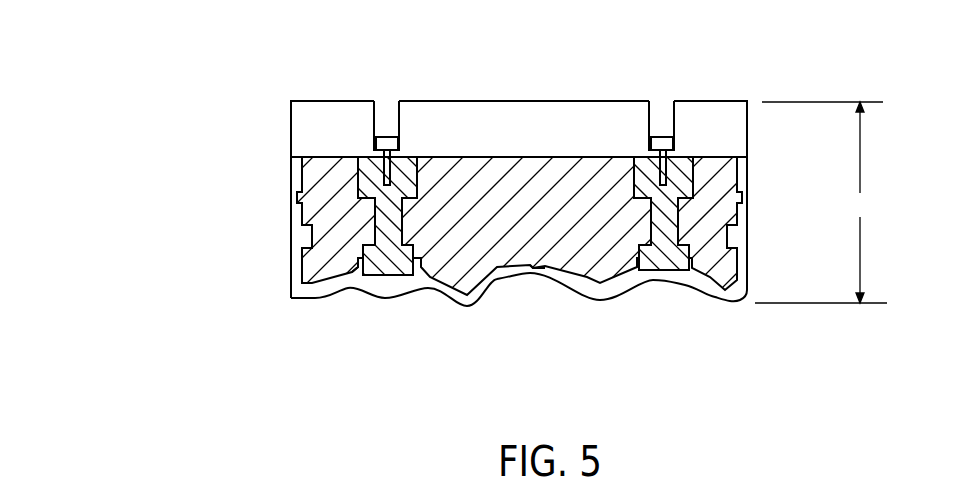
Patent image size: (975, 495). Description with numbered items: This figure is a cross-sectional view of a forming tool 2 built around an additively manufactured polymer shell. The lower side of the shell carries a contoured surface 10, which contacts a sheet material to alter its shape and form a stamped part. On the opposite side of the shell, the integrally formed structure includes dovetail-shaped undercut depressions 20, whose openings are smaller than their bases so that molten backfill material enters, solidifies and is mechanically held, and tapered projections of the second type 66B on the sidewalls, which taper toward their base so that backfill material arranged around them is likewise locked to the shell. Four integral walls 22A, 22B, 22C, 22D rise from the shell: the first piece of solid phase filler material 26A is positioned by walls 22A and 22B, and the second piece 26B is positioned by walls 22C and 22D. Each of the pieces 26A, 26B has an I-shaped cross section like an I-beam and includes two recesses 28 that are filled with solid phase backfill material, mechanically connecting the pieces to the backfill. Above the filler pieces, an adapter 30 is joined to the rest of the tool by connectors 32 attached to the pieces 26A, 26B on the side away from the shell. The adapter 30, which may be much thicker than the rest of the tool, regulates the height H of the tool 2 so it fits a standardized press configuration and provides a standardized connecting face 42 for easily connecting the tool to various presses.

The forming tool 2 is at (98, 77).
The contoured surface 10 is at (310, 307).
The undercut depressions 20 is at (296, 183).
The wall 22A is at (357, 262).
The wall 22B is at (420, 268).
The wall 22C is at (578, 283).
The wall 22D is at (737, 252).
The first piece of solid phase filler material 26A is at (385, 270).
The second piece of solid phase filler material 26B is at (652, 265).
The recesses 28 is at (416, 220).
The adapter 30 is at (302, 132).
The connectors 32 is at (393, 135).
The standardized connecting face 42 is at (332, 98).
The second type of tapered projection 66B is at (300, 237).
The height of the tool H is at (821, 202).